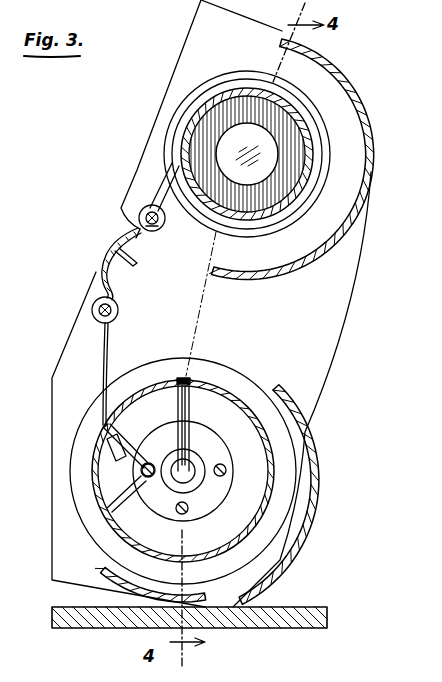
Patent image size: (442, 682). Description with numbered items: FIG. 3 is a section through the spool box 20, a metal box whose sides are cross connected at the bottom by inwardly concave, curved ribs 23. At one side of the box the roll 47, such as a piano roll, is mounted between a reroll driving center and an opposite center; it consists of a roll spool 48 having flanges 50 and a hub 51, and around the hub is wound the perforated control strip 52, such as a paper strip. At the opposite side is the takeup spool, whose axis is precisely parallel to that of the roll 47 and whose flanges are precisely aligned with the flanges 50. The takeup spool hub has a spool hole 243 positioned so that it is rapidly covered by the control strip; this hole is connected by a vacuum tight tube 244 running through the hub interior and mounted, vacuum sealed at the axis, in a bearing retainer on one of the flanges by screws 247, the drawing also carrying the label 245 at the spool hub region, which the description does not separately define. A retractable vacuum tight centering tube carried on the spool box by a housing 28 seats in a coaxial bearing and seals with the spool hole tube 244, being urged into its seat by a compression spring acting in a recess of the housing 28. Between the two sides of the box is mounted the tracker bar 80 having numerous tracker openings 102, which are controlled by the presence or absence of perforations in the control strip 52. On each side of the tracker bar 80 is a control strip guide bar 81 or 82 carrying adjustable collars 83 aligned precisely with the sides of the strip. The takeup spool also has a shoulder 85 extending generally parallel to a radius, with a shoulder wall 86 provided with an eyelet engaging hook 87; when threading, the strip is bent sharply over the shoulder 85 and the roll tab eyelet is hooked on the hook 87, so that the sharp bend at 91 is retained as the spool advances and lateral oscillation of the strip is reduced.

The spool box 20 is at (333, 347).
The ribs 23 is at (336, 254).
The roll 47 is at (229, 96).
The roll spool 48 is at (268, 139).
The flanges 50 is at (301, 171).
The hub 51 is at (205, 104).
The perforated control strip 52 is at (167, 167).
The tracker bar 80 is at (140, 232).
The control strip guide bar 81 is at (160, 200).
The control strip guide bar 82 is at (92, 314).
The adjustable collars 83 is at (139, 212).
The shoulder 85 is at (123, 437).
The shoulder wall 86 is at (108, 500).
The eyelet engaging hook 87 is at (115, 465).
The sharp bend 91 is at (102, 430).
The tracker openings 102 is at (109, 249).
The spool hole 243 is at (182, 378).
The vacuum tight tube 244 is at (189, 382).
The screw 245 is at (178, 480).
The screws 247 is at (222, 477).
The housing 28 is at (232, 430).